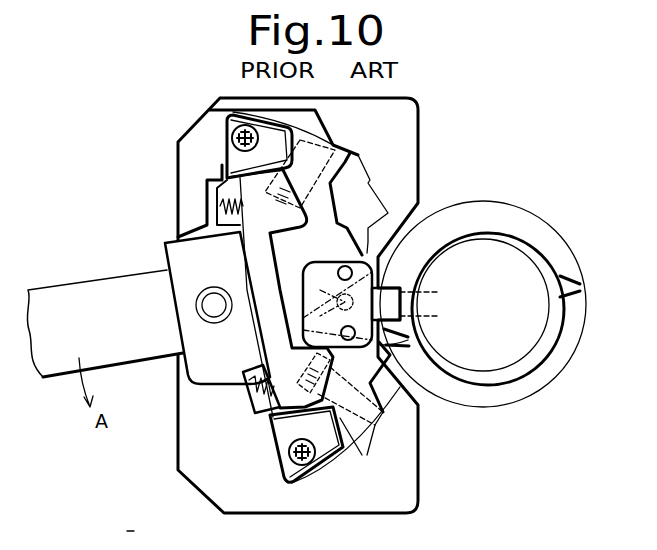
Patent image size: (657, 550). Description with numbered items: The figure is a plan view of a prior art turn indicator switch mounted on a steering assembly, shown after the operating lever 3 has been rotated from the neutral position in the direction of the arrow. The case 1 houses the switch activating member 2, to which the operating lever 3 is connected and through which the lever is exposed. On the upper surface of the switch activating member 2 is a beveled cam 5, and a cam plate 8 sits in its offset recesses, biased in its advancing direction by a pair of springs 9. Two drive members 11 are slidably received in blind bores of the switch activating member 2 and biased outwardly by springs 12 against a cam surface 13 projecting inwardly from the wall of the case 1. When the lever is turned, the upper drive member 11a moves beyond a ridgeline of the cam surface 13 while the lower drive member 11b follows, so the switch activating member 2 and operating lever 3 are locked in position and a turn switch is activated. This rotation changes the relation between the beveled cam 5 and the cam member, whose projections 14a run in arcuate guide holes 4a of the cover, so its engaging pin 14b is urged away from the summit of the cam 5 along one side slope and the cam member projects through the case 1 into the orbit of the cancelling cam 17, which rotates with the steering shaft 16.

The case 1 is at (417, 101).
The switch activating member 2 is at (205, 376).
The operating lever 3 is at (124, 283).
The arcuate guide holes 4a is at (310, 310).
The beveled cam 5 is at (343, 258).
The cam plate 8 is at (272, 412).
The springs 9 is at (285, 395).
The drive member 11 is at (391, 292).
The upper drive member 11a is at (333, 142).
The lower drive member 11b is at (340, 422).
The springs 12 is at (267, 203).
The cam surface 13 is at (318, 122).
The projections 14a is at (388, 352).
The engaging pin 14b is at (345, 302).
The steering shaft 16 is at (490, 250).
The cancelling cam 17 is at (540, 268).